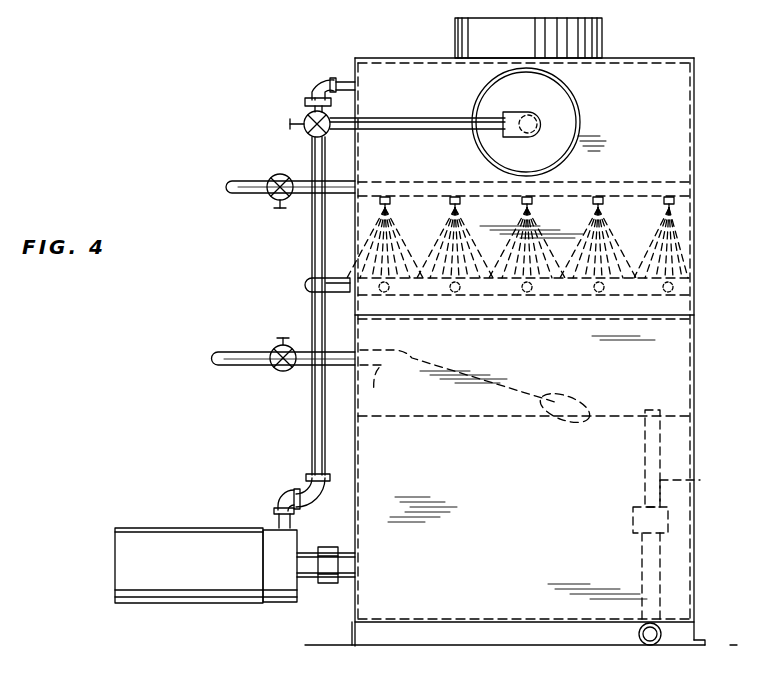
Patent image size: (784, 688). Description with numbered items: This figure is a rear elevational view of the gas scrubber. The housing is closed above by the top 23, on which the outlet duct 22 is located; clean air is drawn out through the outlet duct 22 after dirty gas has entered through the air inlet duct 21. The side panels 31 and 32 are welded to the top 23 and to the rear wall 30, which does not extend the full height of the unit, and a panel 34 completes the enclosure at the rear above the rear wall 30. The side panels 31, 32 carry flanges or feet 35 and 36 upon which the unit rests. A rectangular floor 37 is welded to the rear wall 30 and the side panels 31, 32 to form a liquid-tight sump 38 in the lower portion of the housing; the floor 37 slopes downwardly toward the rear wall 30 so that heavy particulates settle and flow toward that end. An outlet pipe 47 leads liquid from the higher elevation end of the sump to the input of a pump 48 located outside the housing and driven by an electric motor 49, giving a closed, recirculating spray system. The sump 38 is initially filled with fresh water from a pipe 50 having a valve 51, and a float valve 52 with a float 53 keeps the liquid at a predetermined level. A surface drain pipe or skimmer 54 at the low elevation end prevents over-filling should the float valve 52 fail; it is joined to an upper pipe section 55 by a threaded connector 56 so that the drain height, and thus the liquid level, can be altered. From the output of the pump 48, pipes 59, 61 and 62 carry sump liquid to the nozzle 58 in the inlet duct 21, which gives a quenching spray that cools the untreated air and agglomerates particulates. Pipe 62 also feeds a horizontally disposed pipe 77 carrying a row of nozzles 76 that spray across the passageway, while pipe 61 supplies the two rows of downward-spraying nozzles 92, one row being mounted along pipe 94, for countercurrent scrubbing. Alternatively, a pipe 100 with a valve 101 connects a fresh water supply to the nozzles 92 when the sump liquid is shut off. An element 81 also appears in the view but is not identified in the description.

The air inlet duct 21 is at (582, 120).
The outlet duct 22 is at (455, 35).
The top 23 is at (396, 60).
The rear wall 30 is at (440, 624).
The side panel 31 is at (345, 400).
The side panel 32 is at (696, 232).
The panel 34 is at (680, 122).
The flange or foot 35 is at (345, 643).
The flange or foot 36 is at (699, 645).
The rectangular floor 37 is at (505, 625).
The sump 38 is at (668, 457).
The outlet pipe 47 is at (340, 552).
The pump 48 is at (290, 600).
The electric motor 49 is at (150, 594).
The pipe 50 is at (240, 352).
The valve 51 is at (270, 345).
The float valve 52 is at (378, 380).
The float 53 is at (550, 400).
The surface drain pipe or skimmer 54 is at (645, 563).
The upper pipe section 55 is at (701, 484).
The threaded connector 56 is at (632, 522).
The nozzle 58 is at (538, 116).
The pipe 59 is at (432, 118).
The pipe 61 is at (311, 250).
The pipe 62 is at (312, 450).
The nozzles 76 is at (596, 293).
The pipe 77 is at (330, 282).
The elbow 81 is at (344, 82).
The nozzles 92 is at (394, 200).
The pipe 94 is at (661, 196).
The pipe 100 is at (252, 164).
The valve 101 is at (296, 160).